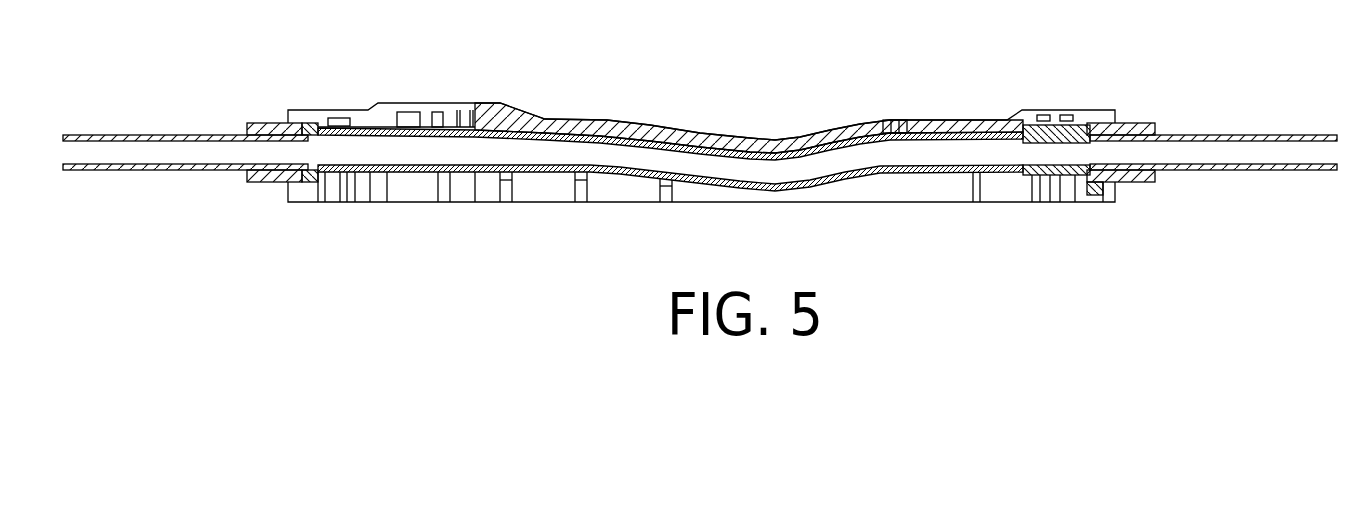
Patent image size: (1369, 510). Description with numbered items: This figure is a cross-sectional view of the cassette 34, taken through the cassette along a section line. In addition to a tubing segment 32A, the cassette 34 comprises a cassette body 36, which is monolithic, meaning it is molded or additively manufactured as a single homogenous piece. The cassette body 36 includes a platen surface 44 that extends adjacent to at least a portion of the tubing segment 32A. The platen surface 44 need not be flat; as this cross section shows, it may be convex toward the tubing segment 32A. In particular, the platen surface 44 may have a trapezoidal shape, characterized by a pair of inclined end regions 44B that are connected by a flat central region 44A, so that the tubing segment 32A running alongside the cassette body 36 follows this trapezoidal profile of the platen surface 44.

The cassette 34 is at (700, 134).
The cassette body 36 is at (550, 131).
The platen surface 44 is at (808, 163).
The flat central region 44A is at (750, 153).
The inclined end regions 44B is at (660, 138).
The tubing segment 32A is at (944, 152).